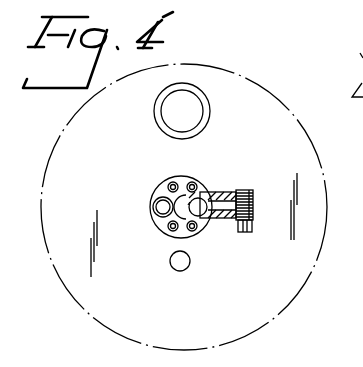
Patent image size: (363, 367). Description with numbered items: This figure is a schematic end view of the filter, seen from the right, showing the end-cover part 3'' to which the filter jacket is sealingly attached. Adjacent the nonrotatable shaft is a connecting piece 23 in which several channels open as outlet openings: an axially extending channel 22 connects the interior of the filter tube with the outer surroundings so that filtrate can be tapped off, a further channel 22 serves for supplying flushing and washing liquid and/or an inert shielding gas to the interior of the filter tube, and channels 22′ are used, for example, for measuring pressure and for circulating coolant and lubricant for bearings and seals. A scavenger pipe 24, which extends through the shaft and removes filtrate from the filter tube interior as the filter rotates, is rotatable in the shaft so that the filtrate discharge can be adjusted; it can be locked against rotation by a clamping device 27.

The end-cover part 3'' is at (191, 207).
The axially extending channel 22 is at (155, 198).
The channel 22′ is at (193, 183).
The connecting piece 23 is at (158, 223).
The scavenger pipe 24 is at (211, 218).
The clamping device 27 is at (233, 220).